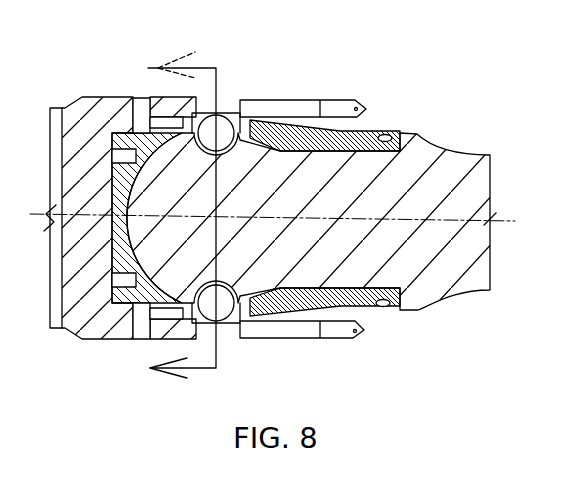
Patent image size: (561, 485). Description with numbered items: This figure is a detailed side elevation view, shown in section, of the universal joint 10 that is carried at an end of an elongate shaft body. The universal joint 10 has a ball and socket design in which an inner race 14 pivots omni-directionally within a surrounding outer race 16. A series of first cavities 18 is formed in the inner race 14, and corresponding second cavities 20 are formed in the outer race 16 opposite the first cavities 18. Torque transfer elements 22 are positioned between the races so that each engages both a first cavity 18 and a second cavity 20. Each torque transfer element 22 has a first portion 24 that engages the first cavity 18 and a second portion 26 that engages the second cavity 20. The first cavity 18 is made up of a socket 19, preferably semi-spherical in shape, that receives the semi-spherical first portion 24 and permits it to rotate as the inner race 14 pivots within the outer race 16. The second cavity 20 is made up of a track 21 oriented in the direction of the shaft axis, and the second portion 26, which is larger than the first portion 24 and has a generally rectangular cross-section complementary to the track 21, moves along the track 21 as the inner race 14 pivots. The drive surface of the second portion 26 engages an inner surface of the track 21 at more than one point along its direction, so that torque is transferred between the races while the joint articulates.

The universal joint 10 is at (303, 50).
The inner race 14 is at (268, 124).
The outer race 16 is at (144, 105).
The first cavities 18 is at (180, 298).
The socket 19 is at (203, 150).
The second cavities 20 is at (220, 320).
The track 21 is at (183, 117).
The torque transfer elements 22 is at (216, 355).
The first portion 24 is at (223, 148).
The second portion 26 is at (236, 122).